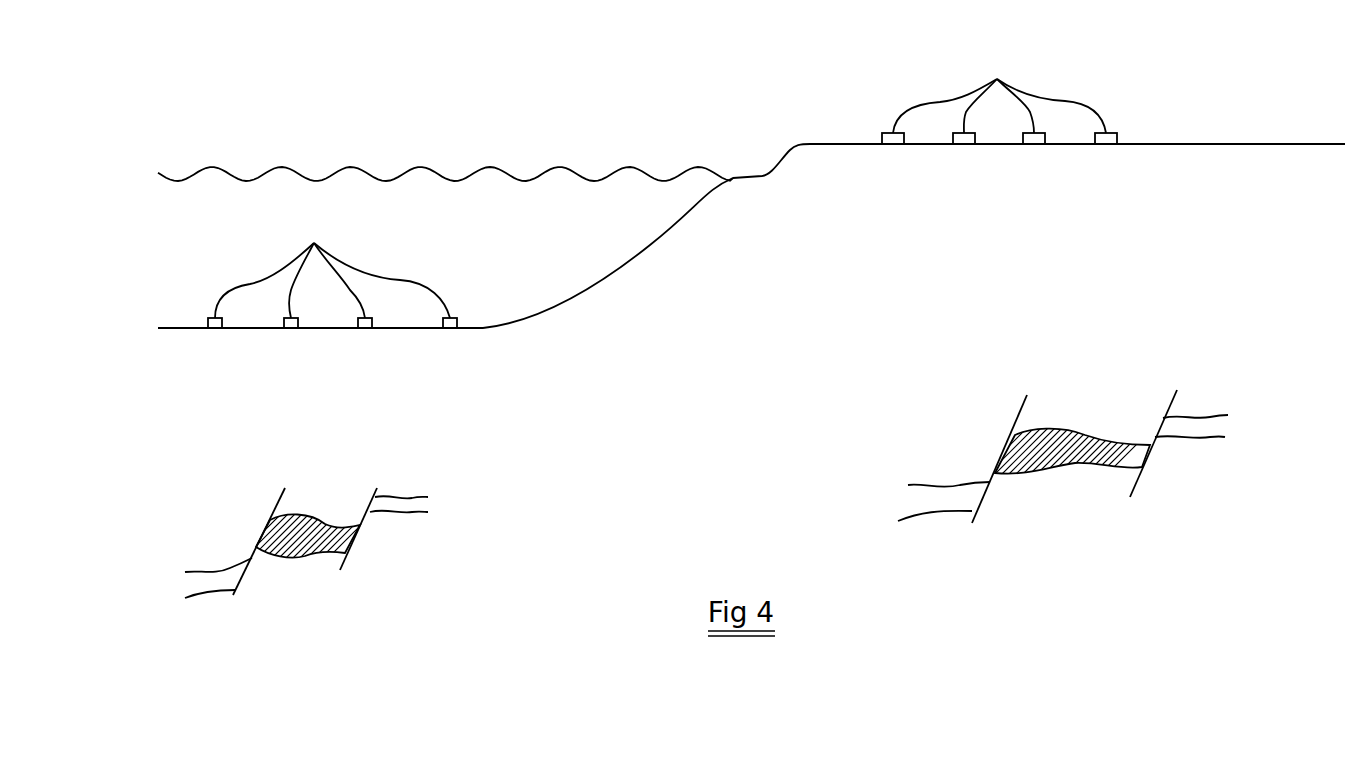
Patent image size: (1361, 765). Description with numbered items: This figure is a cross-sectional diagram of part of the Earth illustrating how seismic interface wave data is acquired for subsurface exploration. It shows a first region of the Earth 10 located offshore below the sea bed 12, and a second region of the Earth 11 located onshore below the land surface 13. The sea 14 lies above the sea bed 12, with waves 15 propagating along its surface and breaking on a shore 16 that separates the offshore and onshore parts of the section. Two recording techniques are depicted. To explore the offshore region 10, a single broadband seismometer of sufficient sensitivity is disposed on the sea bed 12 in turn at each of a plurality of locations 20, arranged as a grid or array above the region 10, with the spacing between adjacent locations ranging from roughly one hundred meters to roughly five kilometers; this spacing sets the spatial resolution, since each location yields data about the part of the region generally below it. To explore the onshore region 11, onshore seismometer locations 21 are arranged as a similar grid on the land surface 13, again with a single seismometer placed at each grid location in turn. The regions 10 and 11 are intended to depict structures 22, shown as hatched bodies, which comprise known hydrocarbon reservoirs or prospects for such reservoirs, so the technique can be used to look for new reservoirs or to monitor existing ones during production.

The first region of the Earth 10 is at (445, 525).
The second region of the Earth 11 is at (1272, 437).
The sea bed 12 is at (484, 329).
The land surface 13 is at (1172, 145).
The sea 14 is at (488, 205).
The waves 15 is at (347, 167).
The shore 16 is at (733, 178).
The locations 20 is at (332, 269).
The onshore seismometer locations 21 is at (999, 97).
The structures 22 is at (318, 518).